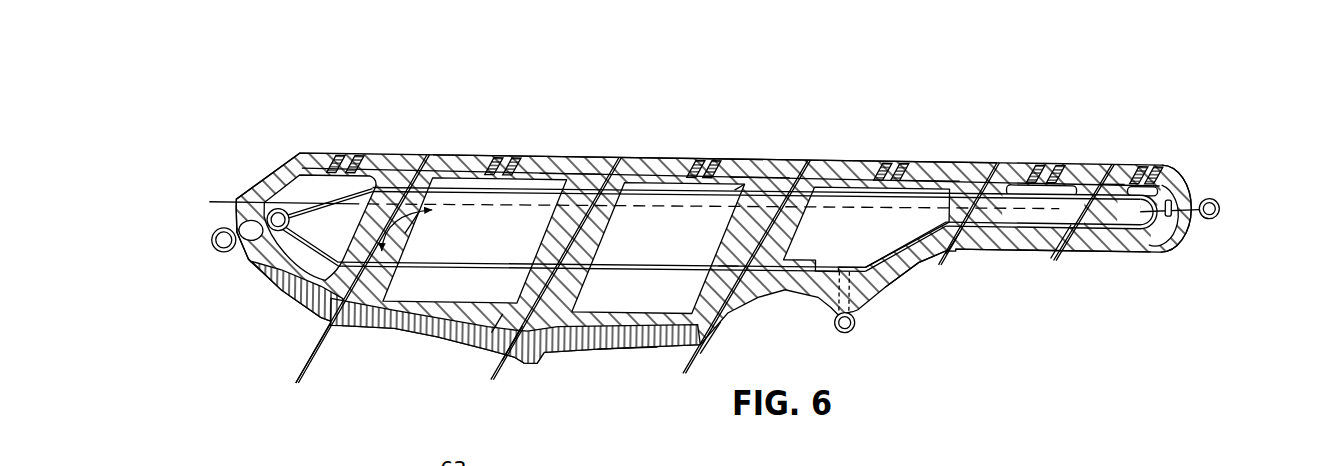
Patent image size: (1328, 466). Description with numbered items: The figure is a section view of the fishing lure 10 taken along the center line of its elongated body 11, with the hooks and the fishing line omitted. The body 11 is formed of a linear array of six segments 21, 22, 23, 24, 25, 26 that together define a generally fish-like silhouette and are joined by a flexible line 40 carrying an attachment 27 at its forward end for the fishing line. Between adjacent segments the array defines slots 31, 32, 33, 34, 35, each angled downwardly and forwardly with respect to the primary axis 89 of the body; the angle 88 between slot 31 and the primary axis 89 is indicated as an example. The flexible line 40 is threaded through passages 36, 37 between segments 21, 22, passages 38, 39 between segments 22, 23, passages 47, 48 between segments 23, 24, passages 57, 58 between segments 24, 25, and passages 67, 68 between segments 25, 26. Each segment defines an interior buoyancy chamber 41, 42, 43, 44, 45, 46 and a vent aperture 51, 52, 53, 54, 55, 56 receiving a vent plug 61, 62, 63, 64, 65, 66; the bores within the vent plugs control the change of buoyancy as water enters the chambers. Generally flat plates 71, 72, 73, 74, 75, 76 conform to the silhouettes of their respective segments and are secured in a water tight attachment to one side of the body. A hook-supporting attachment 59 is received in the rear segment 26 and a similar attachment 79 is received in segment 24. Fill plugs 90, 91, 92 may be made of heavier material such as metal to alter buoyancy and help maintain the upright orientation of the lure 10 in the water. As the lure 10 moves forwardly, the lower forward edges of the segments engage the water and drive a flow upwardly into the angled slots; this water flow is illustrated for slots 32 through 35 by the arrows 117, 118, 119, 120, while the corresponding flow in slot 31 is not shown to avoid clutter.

The fishing lure 10 is at (1012, 85).
The body 11 is at (652, 149).
The segment 21 is at (260, 182).
The segment 22 is at (450, 153).
The segment 23 is at (783, 126).
The segment 24 is at (968, 158).
The segment 25 is at (1105, 154).
The segment 26 is at (1190, 170).
The attachment 27 is at (221, 254).
The slot 31 is at (427, 153).
The slot 32 is at (620, 168).
The slot 33 is at (810, 157).
The slot 34 is at (990, 170).
The slot 35 is at (1128, 171).
The passage 36 is at (372, 188).
The passage 37 is at (282, 341).
The passage 38 is at (565, 161).
The passage 39 is at (533, 264).
The flexible line 40 is at (590, 353).
The interior buoyancy chamber 41 is at (296, 190).
The interior buoyancy chamber 42 is at (565, 161).
The interior buoyancy chamber 43 is at (737, 169).
The buoyancy chamber 44 is at (895, 238).
The buoyancy chamber 45 is at (1027, 210).
The buoyancy chamber 46 is at (1163, 238).
The passage 47 is at (735, 184).
The passage 48 is at (727, 261).
The vent aperture 51 is at (340, 155).
The vent aperture 52 is at (498, 155).
The vent aperture 53 is at (685, 166).
The vent aperture 54 is at (868, 166).
The vent aperture 55 is at (1042, 156).
The vent aperture 56 is at (1144, 156).
The passage 57 is at (953, 192).
The passage 58 is at (945, 243).
The attachment 59 is at (1222, 198).
The vent plug 61 is at (359, 154).
The vent plug 62 is at (519, 155).
The vent plug 63 is at (730, 154).
The vent plug 64 is at (899, 164).
The vent plug 65 is at (1062, 155).
The vent plug 66 is at (1159, 161).
The passage 67 is at (1107, 156).
The passage 68 is at (1063, 239).
The plate 71 is at (338, 239).
The plate 72 is at (483, 292).
The plate 73 is at (658, 296).
The plate 74 is at (858, 244).
The plate 75 is at (1012, 203).
The plate 76 is at (1178, 221).
The attachment 79 is at (838, 315).
The angle 88 is at (406, 233).
The primary axis 89 is at (212, 204).
The fill plug 90 is at (262, 279).
The fill plug 91 is at (492, 330).
The fill plug 92 is at (633, 350).
The first flow path 117 is at (508, 349).
The second flow path 118 is at (707, 341).
The third flow path 119 is at (948, 250).
The fourth flow path 120 is at (1053, 247).